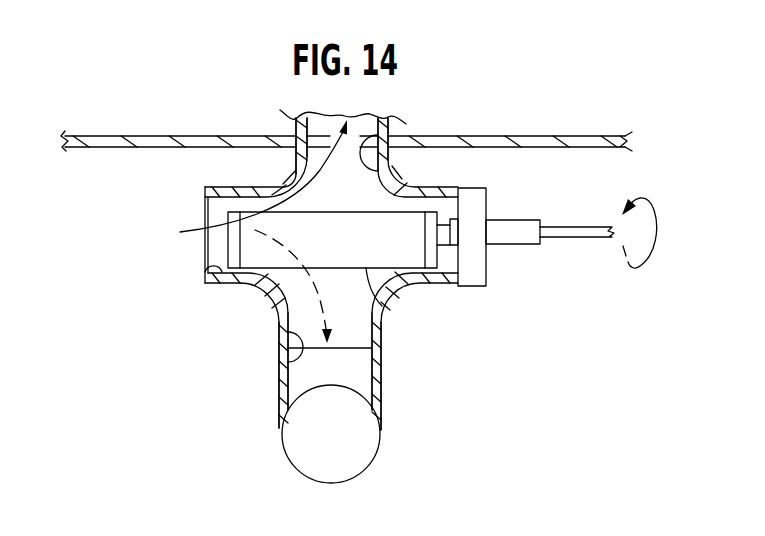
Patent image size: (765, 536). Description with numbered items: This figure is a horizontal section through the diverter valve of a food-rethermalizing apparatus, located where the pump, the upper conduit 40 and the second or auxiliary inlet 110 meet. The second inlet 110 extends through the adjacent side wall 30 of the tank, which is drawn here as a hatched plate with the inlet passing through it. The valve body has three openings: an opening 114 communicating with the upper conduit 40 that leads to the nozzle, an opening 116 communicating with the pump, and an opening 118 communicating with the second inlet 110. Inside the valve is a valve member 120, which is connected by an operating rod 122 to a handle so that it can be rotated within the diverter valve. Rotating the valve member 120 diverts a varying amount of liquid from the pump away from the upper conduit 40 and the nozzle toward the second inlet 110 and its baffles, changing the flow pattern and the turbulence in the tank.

The side wall 30 is at (571, 137).
The upper conduit 40 is at (281, 446).
The second inlet 110 is at (296, 126).
The opening 114 is at (288, 368).
The opening 116 is at (205, 268).
The opening 118 is at (390, 129).
The valve member 120 is at (382, 307).
The operating rod 122 is at (575, 233).